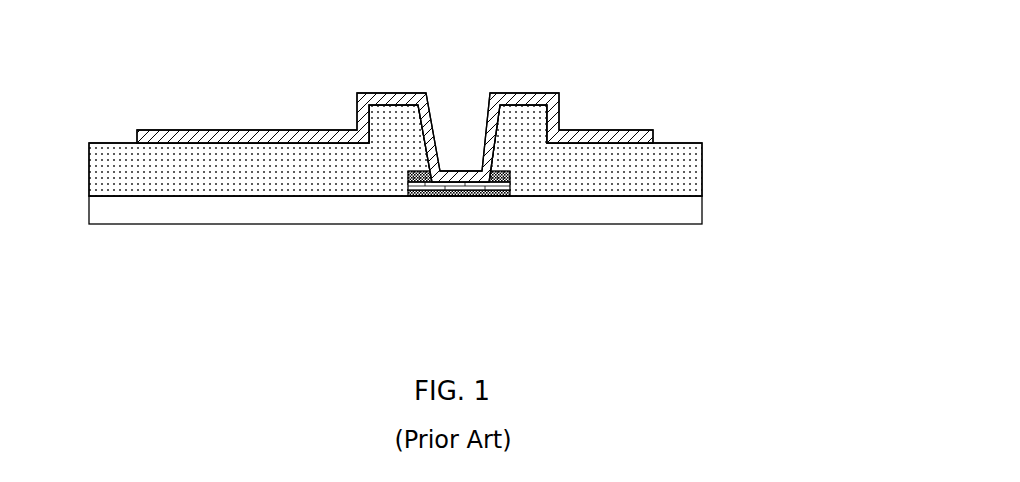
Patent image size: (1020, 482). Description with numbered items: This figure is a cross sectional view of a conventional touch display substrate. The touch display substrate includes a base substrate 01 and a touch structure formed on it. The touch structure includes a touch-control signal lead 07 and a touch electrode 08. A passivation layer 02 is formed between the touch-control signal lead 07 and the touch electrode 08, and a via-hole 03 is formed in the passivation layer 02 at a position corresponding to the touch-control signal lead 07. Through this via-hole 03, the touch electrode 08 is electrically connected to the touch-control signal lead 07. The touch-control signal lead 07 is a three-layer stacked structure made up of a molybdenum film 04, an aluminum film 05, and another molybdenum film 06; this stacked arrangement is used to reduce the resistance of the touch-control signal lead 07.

The base substrate 01 is at (675, 213).
The passivation layer 02 is at (672, 175).
The via-hole 03 is at (457, 143).
The molybdenum film 04 is at (496, 227).
The aluminum film 05 is at (457, 196).
The molybdenum film 06 is at (417, 196).
The touch-control signal lead 07 is at (457, 248).
The touch electrode 08 is at (653, 132).